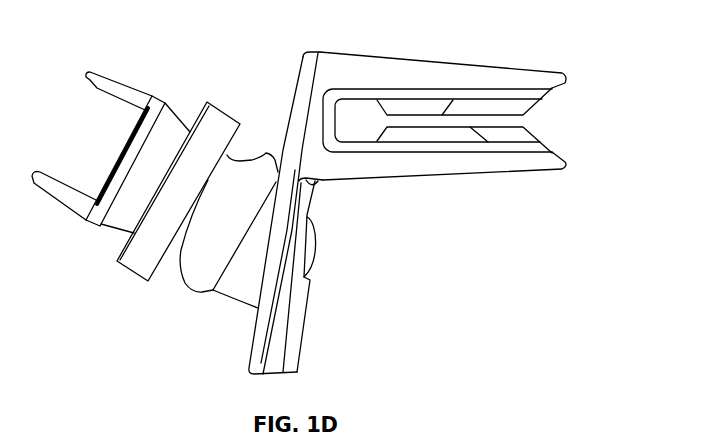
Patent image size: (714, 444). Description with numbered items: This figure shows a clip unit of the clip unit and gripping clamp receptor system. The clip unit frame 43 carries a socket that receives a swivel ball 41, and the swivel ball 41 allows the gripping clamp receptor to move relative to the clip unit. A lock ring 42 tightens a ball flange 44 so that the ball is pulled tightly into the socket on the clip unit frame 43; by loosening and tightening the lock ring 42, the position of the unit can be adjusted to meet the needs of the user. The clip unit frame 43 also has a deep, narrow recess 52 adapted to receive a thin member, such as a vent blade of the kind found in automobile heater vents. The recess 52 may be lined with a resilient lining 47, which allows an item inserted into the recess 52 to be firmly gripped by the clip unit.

The swivel ball 41 is at (318, 256).
The lock ring 42 is at (207, 100).
The clip unit frame 43 is at (453, 60).
The ball flange 44 is at (266, 153).
The resilient lining 47 is at (532, 128).
The recess 52 is at (336, 124).